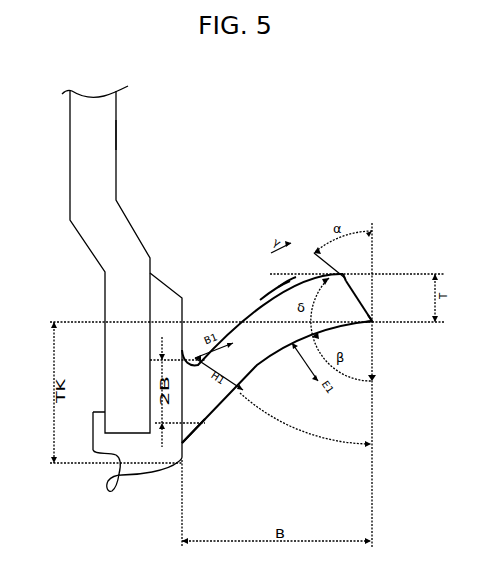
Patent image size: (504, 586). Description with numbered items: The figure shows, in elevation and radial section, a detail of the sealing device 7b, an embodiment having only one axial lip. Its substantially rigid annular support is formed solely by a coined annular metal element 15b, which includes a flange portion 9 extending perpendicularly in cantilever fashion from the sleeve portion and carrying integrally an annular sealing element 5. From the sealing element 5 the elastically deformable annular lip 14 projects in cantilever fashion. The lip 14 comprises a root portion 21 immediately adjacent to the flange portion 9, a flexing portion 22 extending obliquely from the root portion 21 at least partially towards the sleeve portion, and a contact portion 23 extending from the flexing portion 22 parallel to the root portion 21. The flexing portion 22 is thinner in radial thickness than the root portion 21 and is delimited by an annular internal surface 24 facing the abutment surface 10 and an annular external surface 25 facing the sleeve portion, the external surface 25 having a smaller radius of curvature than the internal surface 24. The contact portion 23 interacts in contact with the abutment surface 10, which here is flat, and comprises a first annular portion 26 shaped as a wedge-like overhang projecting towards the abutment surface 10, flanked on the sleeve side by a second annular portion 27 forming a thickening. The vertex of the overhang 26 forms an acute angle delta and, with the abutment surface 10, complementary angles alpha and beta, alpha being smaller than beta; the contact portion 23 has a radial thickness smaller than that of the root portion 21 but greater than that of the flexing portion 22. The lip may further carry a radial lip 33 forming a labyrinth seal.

The flange portion 9 is at (80, 168).
The coined annular metal element 15b is at (106, 133).
The annular sealing element 5 is at (147, 470).
The hook lip 33 is at (108, 490).
The flexing portion 22 is at (238, 317).
The annular external surface 25 is at (258, 290).
The second annular lip 14 is at (281, 273).
The sealing device 7b is at (295, 176).
The second annular portion 27 is at (352, 281).
The contact portion 23 is at (349, 328).
The first annular portion 26 is at (374, 323).
The abutment surface 10 is at (366, 260).
The annular internal surface 24 is at (262, 396).
The root portion 21 is at (195, 405).